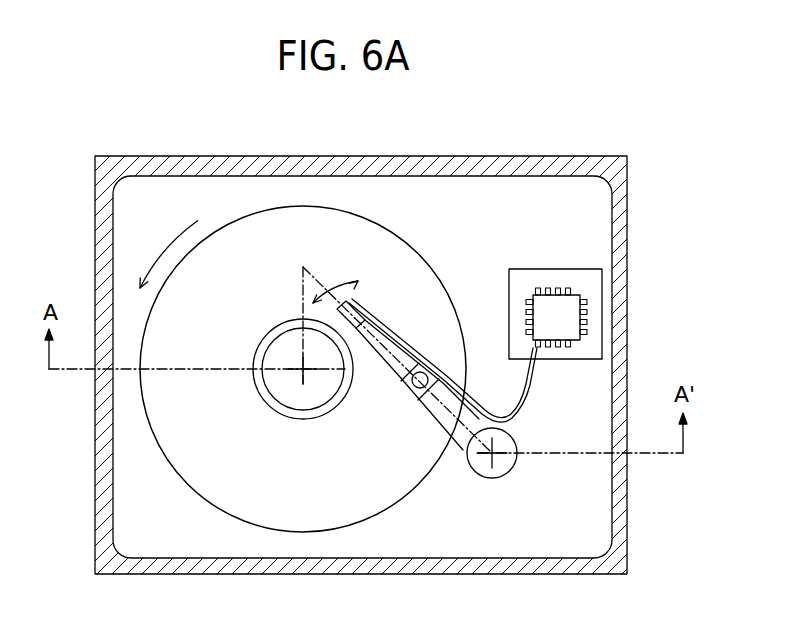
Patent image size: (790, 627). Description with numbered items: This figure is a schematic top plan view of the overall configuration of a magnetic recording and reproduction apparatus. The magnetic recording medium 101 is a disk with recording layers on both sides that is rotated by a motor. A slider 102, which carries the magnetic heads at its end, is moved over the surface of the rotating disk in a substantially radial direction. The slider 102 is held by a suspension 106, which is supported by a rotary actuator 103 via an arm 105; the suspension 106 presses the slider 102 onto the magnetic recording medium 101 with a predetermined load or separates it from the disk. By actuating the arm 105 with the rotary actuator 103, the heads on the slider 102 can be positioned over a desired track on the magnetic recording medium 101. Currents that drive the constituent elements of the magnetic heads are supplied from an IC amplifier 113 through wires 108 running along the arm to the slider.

The magnetic recording medium 101 is at (302, 205).
The slider 102 is at (375, 298).
The rotary actuator 103 is at (483, 479).
The arm 105 is at (426, 420).
The suspension 106 is at (388, 362).
The wires 108 is at (540, 378).
The IC amplifier 113 is at (580, 296).